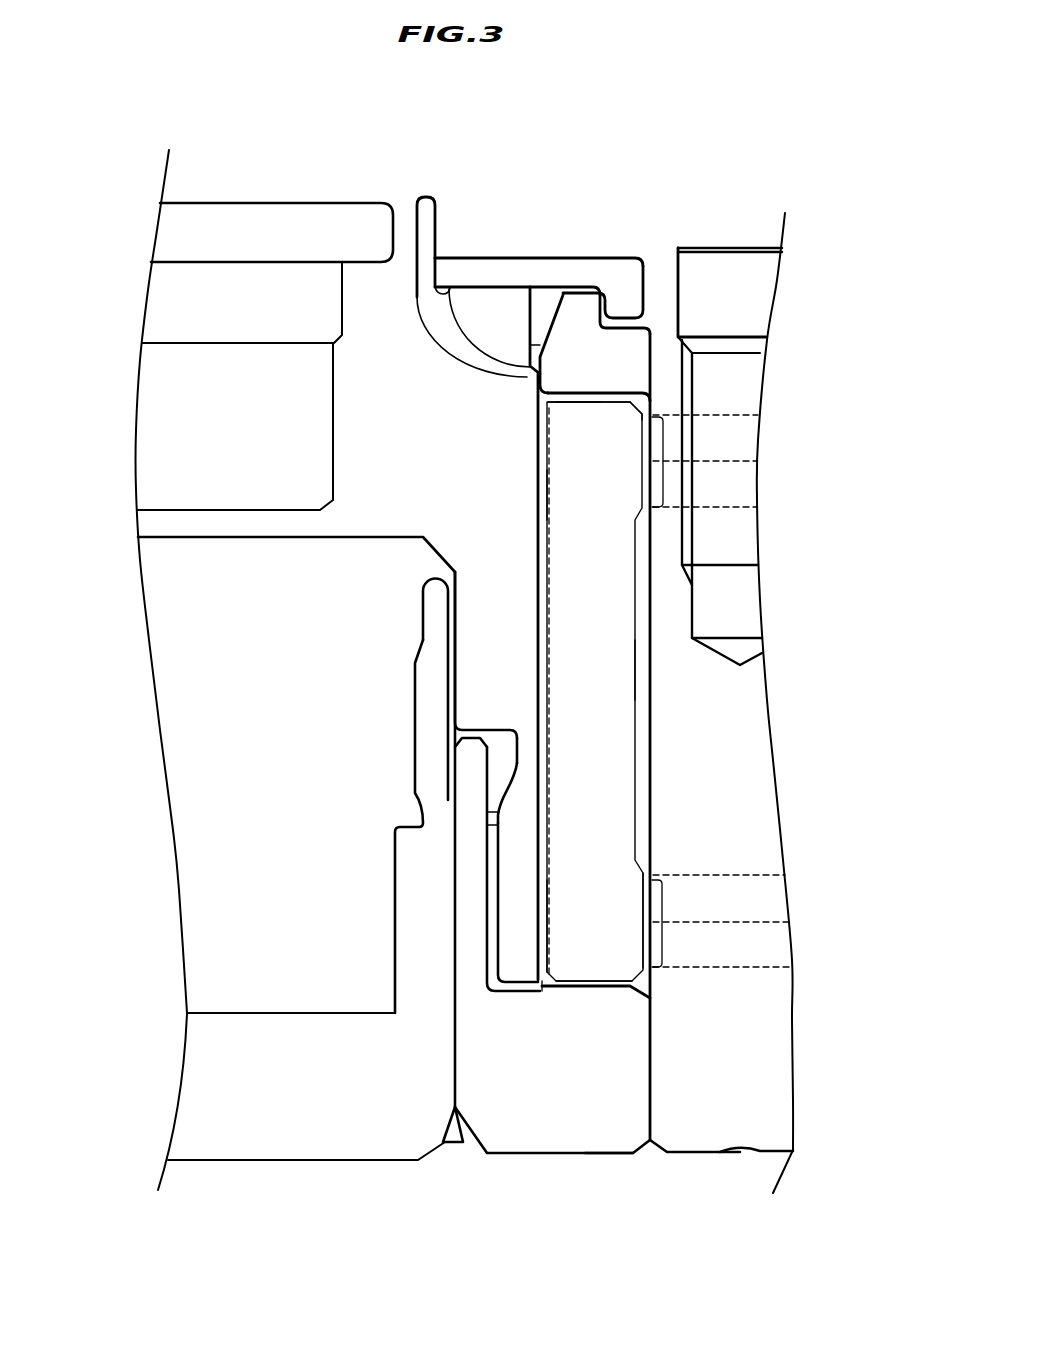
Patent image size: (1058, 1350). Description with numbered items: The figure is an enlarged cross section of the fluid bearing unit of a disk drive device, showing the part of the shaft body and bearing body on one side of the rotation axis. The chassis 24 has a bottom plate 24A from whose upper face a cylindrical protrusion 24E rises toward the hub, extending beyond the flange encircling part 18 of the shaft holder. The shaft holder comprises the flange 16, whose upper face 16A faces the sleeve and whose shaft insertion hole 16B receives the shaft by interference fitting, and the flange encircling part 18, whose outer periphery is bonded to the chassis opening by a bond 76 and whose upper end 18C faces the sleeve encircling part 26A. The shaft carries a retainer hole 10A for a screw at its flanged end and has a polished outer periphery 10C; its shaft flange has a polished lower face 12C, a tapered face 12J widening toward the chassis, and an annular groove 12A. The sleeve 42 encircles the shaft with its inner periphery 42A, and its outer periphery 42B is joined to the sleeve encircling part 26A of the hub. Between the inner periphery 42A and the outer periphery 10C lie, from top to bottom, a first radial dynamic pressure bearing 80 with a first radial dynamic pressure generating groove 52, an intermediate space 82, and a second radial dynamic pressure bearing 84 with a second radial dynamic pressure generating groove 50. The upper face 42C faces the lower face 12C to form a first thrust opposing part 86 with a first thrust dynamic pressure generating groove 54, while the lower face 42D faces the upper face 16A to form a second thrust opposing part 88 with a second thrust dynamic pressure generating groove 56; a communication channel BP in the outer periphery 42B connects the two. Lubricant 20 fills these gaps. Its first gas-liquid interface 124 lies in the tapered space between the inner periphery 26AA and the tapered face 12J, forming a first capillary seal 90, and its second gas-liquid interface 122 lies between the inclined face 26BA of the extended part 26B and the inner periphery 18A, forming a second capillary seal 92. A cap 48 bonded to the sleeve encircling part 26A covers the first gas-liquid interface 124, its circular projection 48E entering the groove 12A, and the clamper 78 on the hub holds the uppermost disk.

The retainer hole 10A is at (682, 292).
The outer periphery of the shaft 10C is at (655, 700).
The groove 12A is at (626, 310).
The lower face of the shaft flange 12C is at (575, 345).
The tapered face 12J is at (556, 320).
The flange 16 is at (623, 1127).
The upper face of the flange 16A is at (585, 990).
The shaft insertion hole 16B is at (652, 1072).
The flange encircling part 18 is at (475, 887).
The inner periphery of the flange encircling part 18A is at (457, 1008).
The upper end of the flange encircling part 18C is at (470, 740).
The lubricant 20 is at (538, 400).
The chassis 24 is at (337, 1142).
The bottom plate 24A is at (230, 1160).
The protrusion 24E is at (435, 592).
The sleeve encircling part 26A is at (485, 603).
The inner periphery of the sleeve encircling part 26AA is at (412, 197).
The extended part 26B is at (517, 930).
The inclined face 26BA is at (508, 800).
The sleeve 42 is at (578, 532).
The inner periphery of the sleeve 42A is at (633, 668).
The outer periphery of the sleeve 42B is at (552, 605).
The upper face of the sleeve 42C is at (628, 300).
The lower face of the sleeve 42D is at (613, 978).
The cap 48 is at (483, 268).
The circular projection 48E is at (640, 343).
The second radial dynamic pressure generating groove 50 is at (630, 992).
The first radial dynamic pressure generating groove 52 is at (560, 492).
The first thrust dynamic pressure generating groove 54 is at (574, 402).
The second thrust dynamic pressure generating groove 56 is at (550, 913).
The bond 76 is at (450, 1142).
The clamper 78 is at (270, 203).
The first radial dynamic pressure bearing 80 is at (667, 455).
The intermediate space 82 is at (637, 618).
The second radial dynamic pressure bearing 84 is at (662, 915).
The first thrust opposing part 86 is at (587, 396).
The second thrust opposing part 88 is at (597, 979).
The first capillary seal 90 is at (528, 365).
The second capillary seal 92 is at (496, 828).
The second gas-liquid interface 122 is at (510, 728).
The first gas-liquid interface 124 is at (545, 330).
The communication channel BP is at (530, 985).